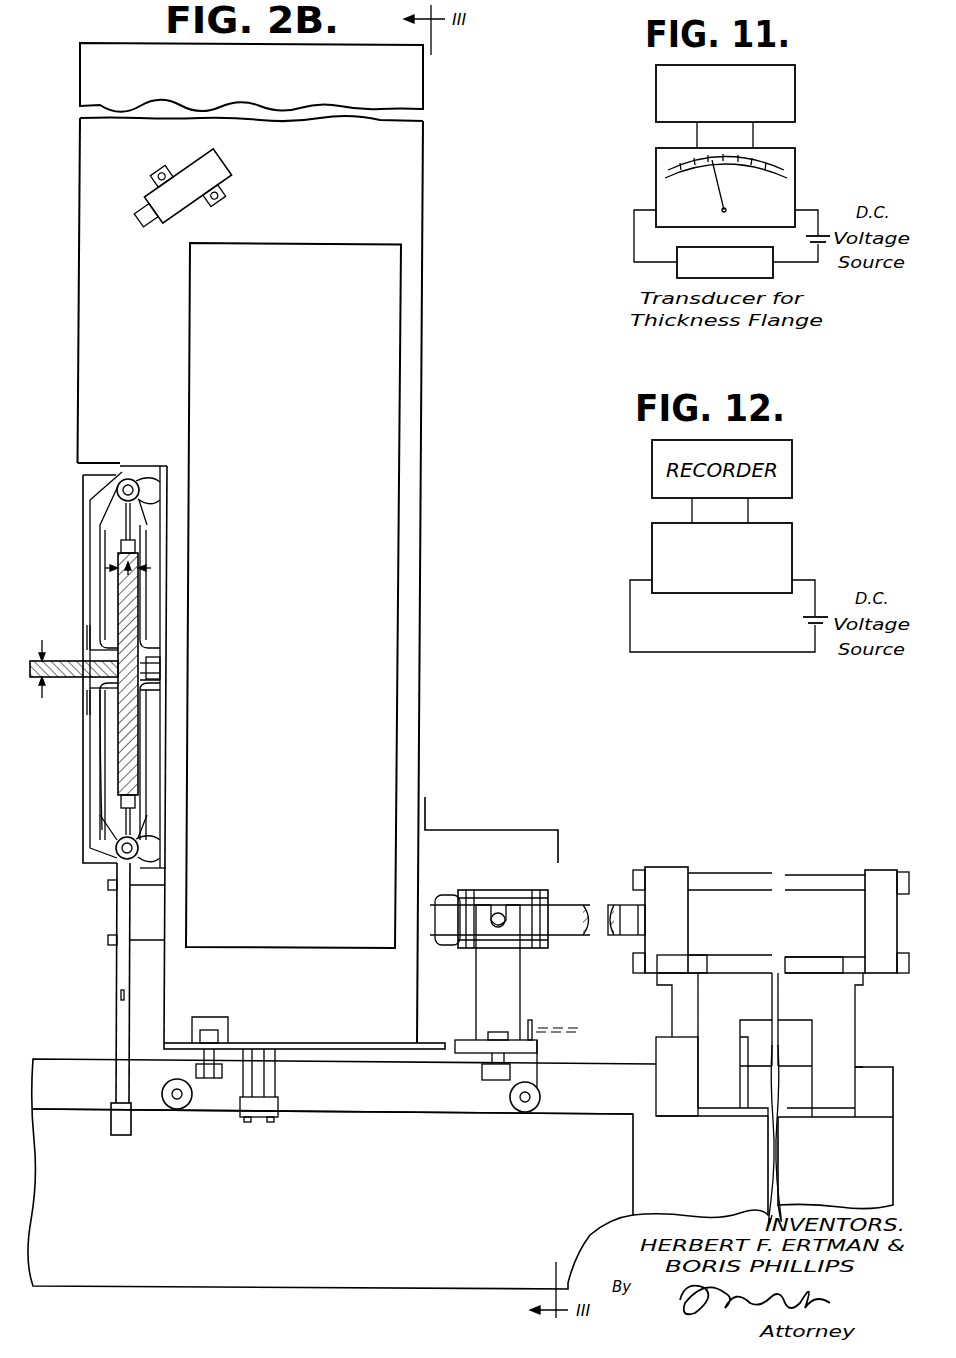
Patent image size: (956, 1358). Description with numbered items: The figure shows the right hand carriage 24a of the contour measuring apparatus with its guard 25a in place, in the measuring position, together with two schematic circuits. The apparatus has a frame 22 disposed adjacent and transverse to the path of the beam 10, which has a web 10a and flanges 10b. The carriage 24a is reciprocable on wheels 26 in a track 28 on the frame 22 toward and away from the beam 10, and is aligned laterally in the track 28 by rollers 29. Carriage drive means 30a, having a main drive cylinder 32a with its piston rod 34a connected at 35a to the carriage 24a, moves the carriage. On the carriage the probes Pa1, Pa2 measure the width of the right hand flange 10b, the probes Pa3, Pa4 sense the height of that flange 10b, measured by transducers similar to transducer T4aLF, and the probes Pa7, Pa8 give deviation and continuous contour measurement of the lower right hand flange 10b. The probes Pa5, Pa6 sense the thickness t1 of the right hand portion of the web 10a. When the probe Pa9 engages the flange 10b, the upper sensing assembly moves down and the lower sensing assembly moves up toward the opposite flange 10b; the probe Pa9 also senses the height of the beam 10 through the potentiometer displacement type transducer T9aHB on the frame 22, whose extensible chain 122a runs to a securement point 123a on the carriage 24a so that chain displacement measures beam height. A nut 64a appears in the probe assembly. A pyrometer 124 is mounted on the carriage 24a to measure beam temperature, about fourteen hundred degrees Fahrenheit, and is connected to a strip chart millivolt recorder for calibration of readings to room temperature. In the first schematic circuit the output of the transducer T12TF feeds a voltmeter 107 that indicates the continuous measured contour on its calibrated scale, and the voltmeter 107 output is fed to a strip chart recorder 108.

In FIG. 2B, the guard 25a is at (421, 355).
In FIG. 2B, the pyrometer 124 is at (222, 163).
In FIG. 12, the pyrometer 124 is at (700, 589).
In FIG. 2B, the probe Pa1 is at (142, 590).
In FIG. 2B, the probe Pa2 is at (150, 632).
In FIG. 2B, the probe Pa3 is at (138, 548).
In FIG. 2B, the probe Pa4 is at (138, 790).
In FIG. 2B, the probe Pa5 is at (88, 640).
In FIG. 2B, the probe Pa6 is at (88, 700).
In FIG. 2B, the probe Pa7 is at (100, 735).
In FIG. 2B, the probe Pa8 is at (148, 712).
In FIG. 2B, the probe Pa9 is at (160, 688).
In FIG. 2B, the adjusting nut 64a is at (160, 668).
In FIG. 2B, the beam 10 is at (63, 680).
In FIG. 2B, the web 10a is at (58, 658).
In FIG. 2B, the flange 10b is at (118, 560).
In FIG. 2B, the thickness of the web t1 is at (40, 674).
In FIG. 2B, the transducer T4aLF is at (112, 960).
In FIG. 2B, the carriage 24a is at (383, 1052).
In FIG. 2B, the roller 29 is at (210, 1078).
In FIG. 2B, the wheel 26 is at (177, 1109).
In FIG. 2B, the track 28 is at (365, 1115).
In FIG. 2B, the frame 22 is at (345, 1280).
In FIG. 2B, the piston rod 34a is at (571, 905).
In FIG. 2B, the connection 35a is at (498, 913).
In FIG. 2B, the securement point 123a is at (530, 1020).
In FIG. 2B, the extensible chain 122a is at (560, 1034).
In FIG. 2B, the potentiometer displacement type transducer T9aHB is at (668, 1005).
In FIG. 2B, the carriage drive means 30a is at (730, 860).
In FIG. 2B, the main drive cylinder 32a is at (815, 898).
In FIG. 11, the strip chart recorder 108 is at (795, 97).
In FIG. 11, the voltmeter 107 is at (795, 160).
In FIG. 11, the transducer T12TF is at (725, 262).